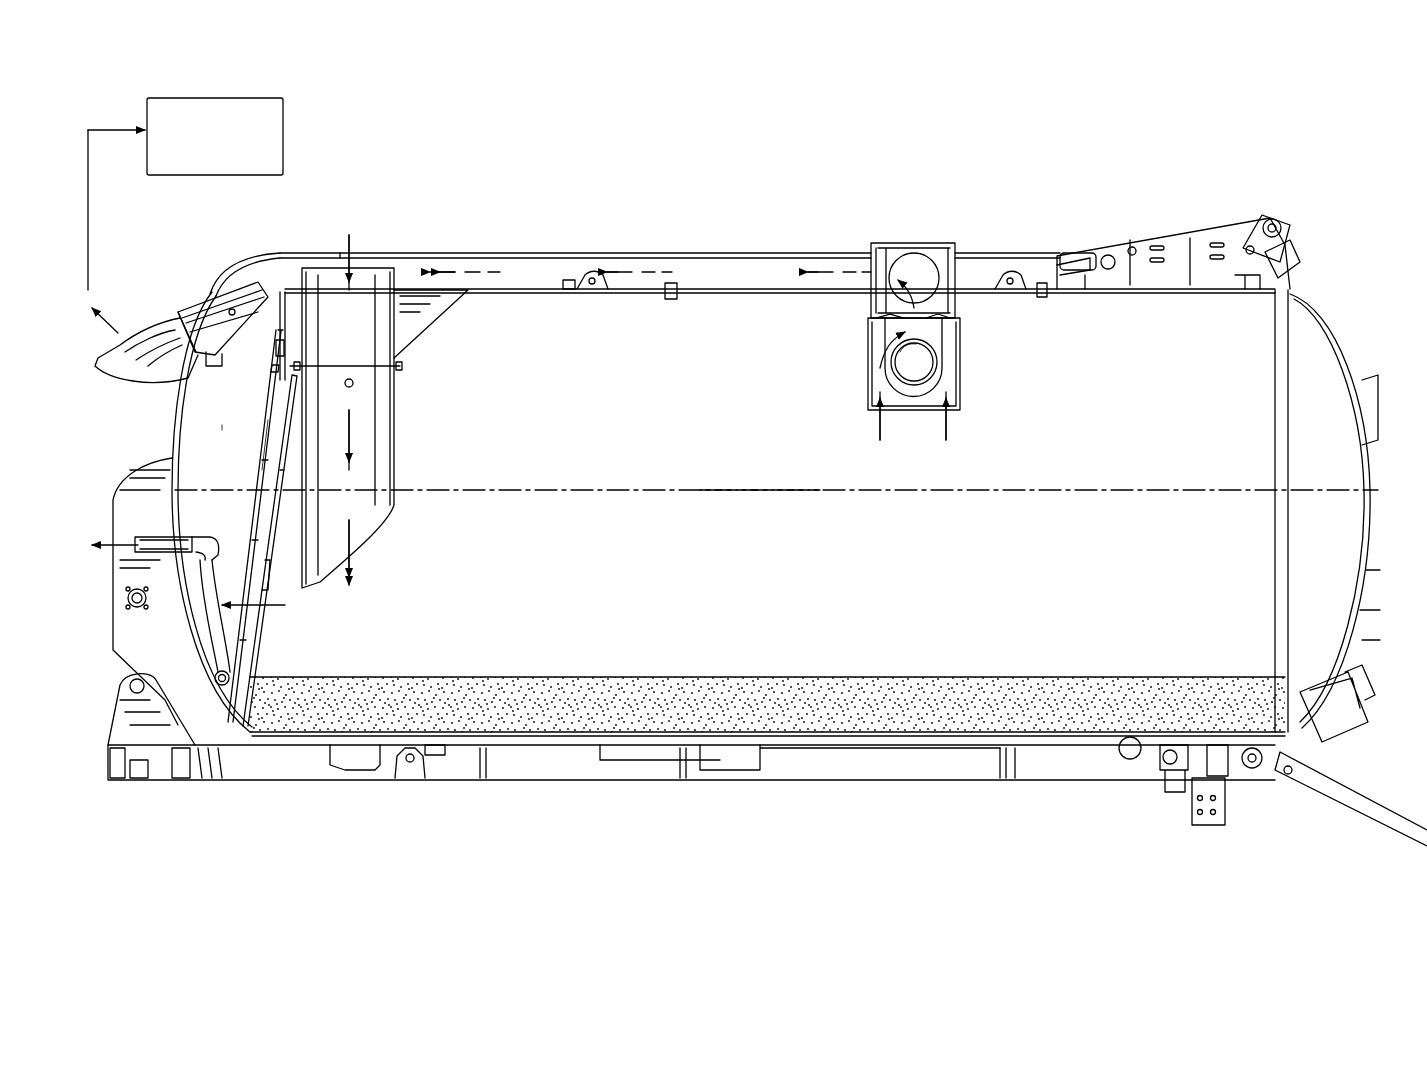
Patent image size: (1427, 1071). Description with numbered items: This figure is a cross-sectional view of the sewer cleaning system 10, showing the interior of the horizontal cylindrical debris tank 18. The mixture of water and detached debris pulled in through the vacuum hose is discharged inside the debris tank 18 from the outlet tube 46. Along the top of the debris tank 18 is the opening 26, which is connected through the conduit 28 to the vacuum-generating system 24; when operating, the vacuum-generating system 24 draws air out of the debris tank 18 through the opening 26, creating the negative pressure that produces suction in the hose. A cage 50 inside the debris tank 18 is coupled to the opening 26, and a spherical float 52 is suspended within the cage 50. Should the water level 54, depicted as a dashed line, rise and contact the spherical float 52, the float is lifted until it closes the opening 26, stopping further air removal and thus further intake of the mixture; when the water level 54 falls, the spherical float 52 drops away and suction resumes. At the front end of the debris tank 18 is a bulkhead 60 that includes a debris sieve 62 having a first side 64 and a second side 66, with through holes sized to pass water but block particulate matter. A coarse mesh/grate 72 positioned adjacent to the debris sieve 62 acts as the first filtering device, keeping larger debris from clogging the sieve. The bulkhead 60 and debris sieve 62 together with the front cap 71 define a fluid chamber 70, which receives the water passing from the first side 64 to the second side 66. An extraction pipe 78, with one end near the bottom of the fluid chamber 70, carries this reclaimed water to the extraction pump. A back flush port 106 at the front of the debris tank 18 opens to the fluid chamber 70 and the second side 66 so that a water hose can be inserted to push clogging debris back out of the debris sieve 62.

The sewer cleaning system 10 is at (644, 130).
The debris tank 18 is at (738, 289).
The vacuum-generating system 24 is at (240, 98).
The opening 26 is at (918, 266).
The conduit 28 is at (516, 258).
The outlet tube 46 is at (398, 422).
The cage 50 is at (960, 362).
The spherical float 52 is at (902, 372).
The water level 54 is at (767, 490).
The bulkhead 60 is at (282, 396).
The debris sieve 62 is at (254, 466).
The first side 64 is at (262, 636).
The second side 66 is at (254, 542).
The fluid chamber 70 is at (224, 428).
The front cap 71 is at (170, 505).
The mesh/grate 72 is at (267, 582).
The extraction pipe 78 is at (208, 622).
The back flush port 106 is at (208, 312).